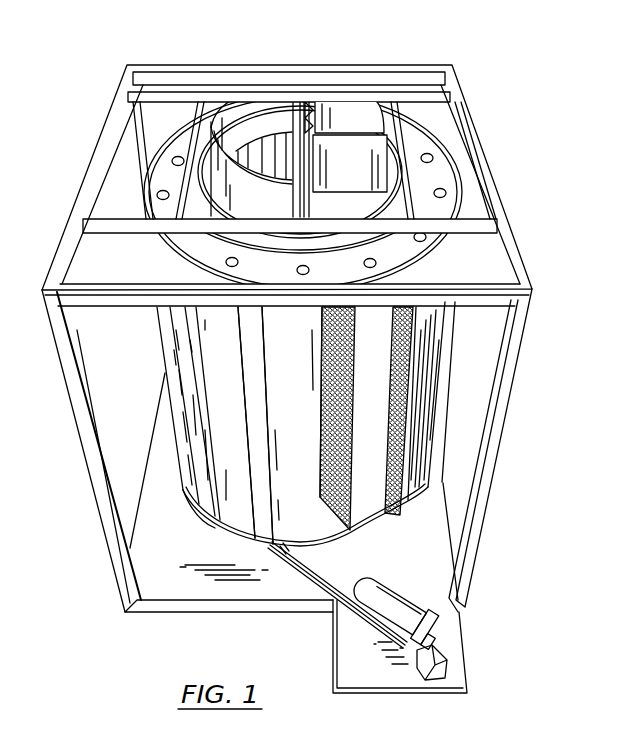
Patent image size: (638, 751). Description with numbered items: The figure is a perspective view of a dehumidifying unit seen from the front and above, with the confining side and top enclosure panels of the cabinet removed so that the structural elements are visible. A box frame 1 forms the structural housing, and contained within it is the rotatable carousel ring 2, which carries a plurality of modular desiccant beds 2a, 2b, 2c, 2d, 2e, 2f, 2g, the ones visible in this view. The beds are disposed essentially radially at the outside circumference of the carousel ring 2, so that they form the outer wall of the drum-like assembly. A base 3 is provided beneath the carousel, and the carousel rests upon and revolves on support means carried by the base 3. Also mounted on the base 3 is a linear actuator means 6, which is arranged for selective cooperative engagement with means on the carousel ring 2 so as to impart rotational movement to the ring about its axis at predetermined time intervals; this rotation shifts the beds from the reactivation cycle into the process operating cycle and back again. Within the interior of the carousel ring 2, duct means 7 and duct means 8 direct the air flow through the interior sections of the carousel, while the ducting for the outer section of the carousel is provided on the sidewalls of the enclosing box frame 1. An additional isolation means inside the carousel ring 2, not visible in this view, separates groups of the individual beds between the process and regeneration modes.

The box frame 1 is at (512, 368).
The carousel ring 2 is at (172, 384).
The modular desiccant bed 2a is at (180, 468).
The modular desiccant bed 2b is at (203, 510).
The modular desiccant bed 2c is at (235, 408).
The modular desiccant bed 2d is at (305, 408).
The modular desiccant bed 2e is at (383, 408).
The modular desiccant bed 2f is at (413, 507).
The modular desiccant bed 2g is at (430, 457).
The base 3 is at (178, 593).
The linear actuator means 6 is at (368, 612).
The duct means 7 is at (262, 104).
The duct means 8 is at (360, 120).